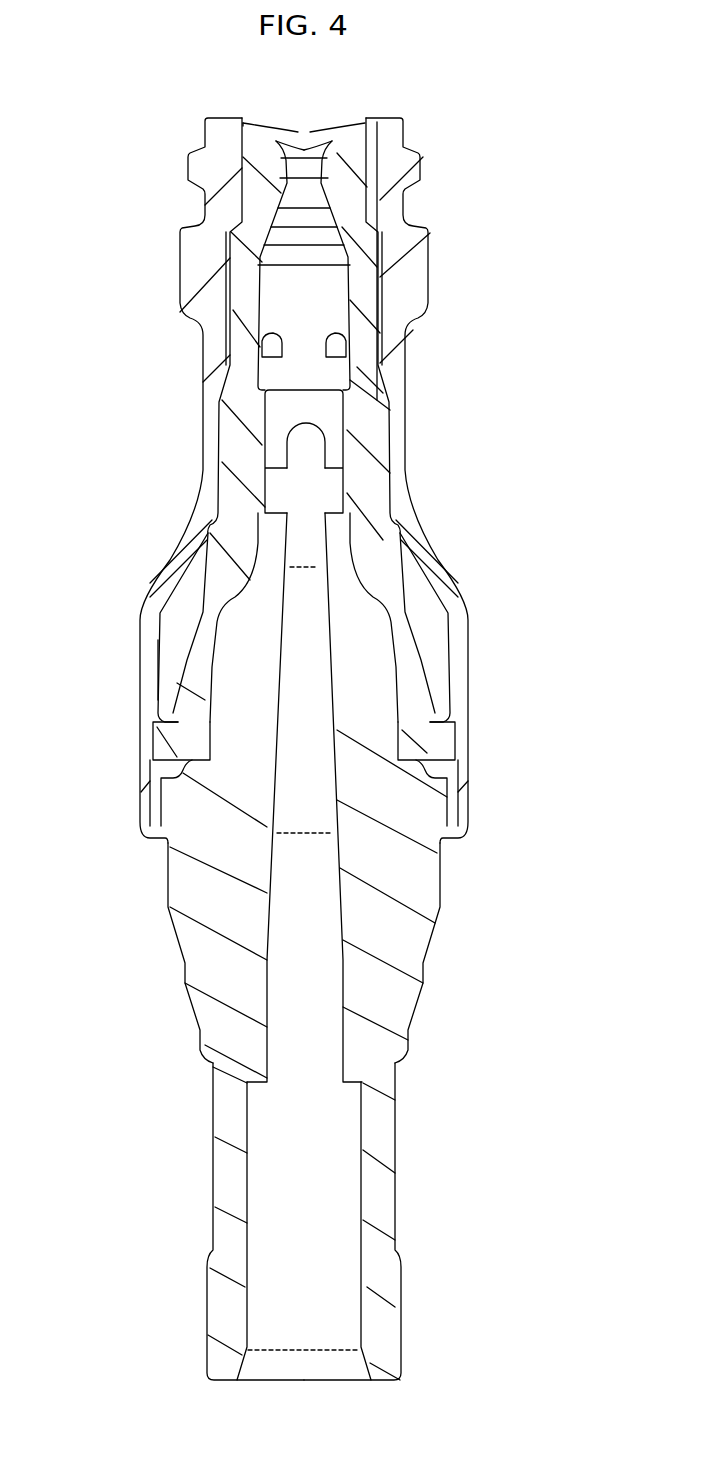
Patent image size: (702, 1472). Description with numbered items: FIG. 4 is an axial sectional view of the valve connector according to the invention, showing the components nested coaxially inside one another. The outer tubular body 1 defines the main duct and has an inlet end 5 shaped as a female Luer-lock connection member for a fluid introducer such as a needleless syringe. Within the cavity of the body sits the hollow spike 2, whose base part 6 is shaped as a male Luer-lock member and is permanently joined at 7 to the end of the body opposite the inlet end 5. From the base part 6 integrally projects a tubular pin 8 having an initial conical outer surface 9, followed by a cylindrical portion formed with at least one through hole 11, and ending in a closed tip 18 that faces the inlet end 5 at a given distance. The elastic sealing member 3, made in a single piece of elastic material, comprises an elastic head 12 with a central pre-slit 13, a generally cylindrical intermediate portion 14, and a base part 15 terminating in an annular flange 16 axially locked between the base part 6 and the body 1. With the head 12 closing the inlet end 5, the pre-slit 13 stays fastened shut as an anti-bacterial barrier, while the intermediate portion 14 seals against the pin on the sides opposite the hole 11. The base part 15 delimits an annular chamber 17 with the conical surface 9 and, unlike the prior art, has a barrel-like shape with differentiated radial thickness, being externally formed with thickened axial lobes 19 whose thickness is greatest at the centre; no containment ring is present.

The outer tubular body 1 is at (430, 507).
The hollow spike 2 is at (368, 626).
The elastic sealing member 3 is at (218, 427).
The inlet end 5 is at (377, 122).
The base part 6 is at (383, 1135).
The joint 7 is at (468, 825).
The tubular pin 8 is at (283, 565).
The conical outer surface 9 is at (227, 682).
The through hole 11 is at (318, 488).
The elastic head 12 is at (250, 122).
The central pre-slit 13 is at (304, 130).
The cylindrical intermediate portion 14 is at (243, 287).
The base part 15 is at (427, 680).
The annular flange 16 is at (165, 748).
The annular chamber 17 is at (223, 660).
The closed tip 18 is at (350, 405).
The thickened axial lobes 19 is at (193, 627).